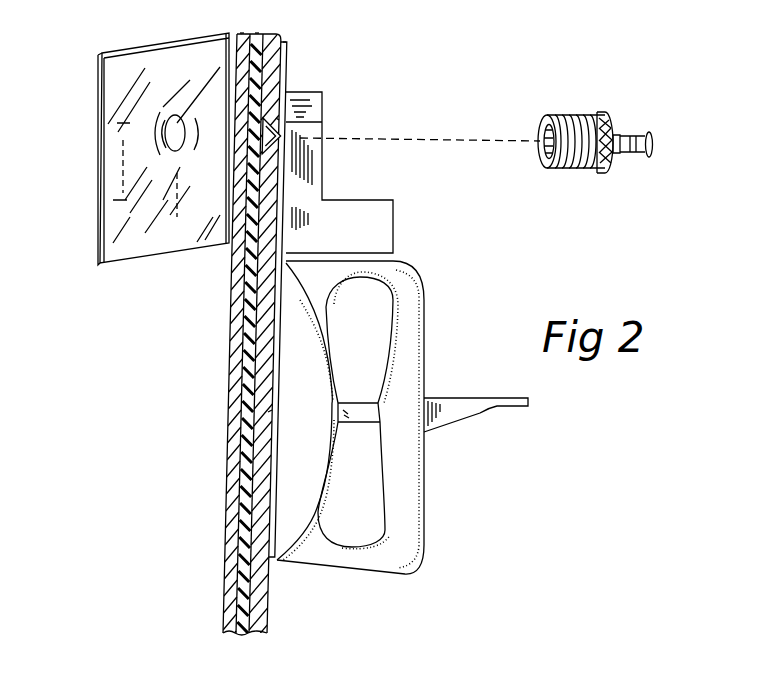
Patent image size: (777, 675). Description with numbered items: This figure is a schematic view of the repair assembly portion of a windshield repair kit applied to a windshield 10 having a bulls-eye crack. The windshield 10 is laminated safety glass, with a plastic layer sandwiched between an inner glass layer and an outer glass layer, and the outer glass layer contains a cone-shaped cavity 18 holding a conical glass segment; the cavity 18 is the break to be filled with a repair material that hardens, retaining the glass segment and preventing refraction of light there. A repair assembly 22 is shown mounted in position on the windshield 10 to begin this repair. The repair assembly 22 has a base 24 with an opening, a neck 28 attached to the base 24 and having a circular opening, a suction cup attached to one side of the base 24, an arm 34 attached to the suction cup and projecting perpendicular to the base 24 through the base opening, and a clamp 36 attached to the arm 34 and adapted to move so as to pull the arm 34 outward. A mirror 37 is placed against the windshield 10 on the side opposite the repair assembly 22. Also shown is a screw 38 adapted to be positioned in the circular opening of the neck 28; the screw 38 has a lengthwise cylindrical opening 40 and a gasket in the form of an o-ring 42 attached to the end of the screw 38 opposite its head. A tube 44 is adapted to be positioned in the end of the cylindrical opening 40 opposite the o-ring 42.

The windshield 10 is at (268, 347).
The cone-shaped cavity 18 is at (281, 137).
The repair assembly 22 is at (407, 401).
The base 24 is at (303, 355).
The neck 28 is at (305, 181).
The arm 34 is at (360, 410).
The clamp 36 is at (480, 408).
The mirror 37 is at (123, 63).
The screw 38 is at (570, 133).
The cylindrical opening 40 is at (543, 123).
The o-ring 42 is at (541, 141).
The tube 44 is at (637, 153).